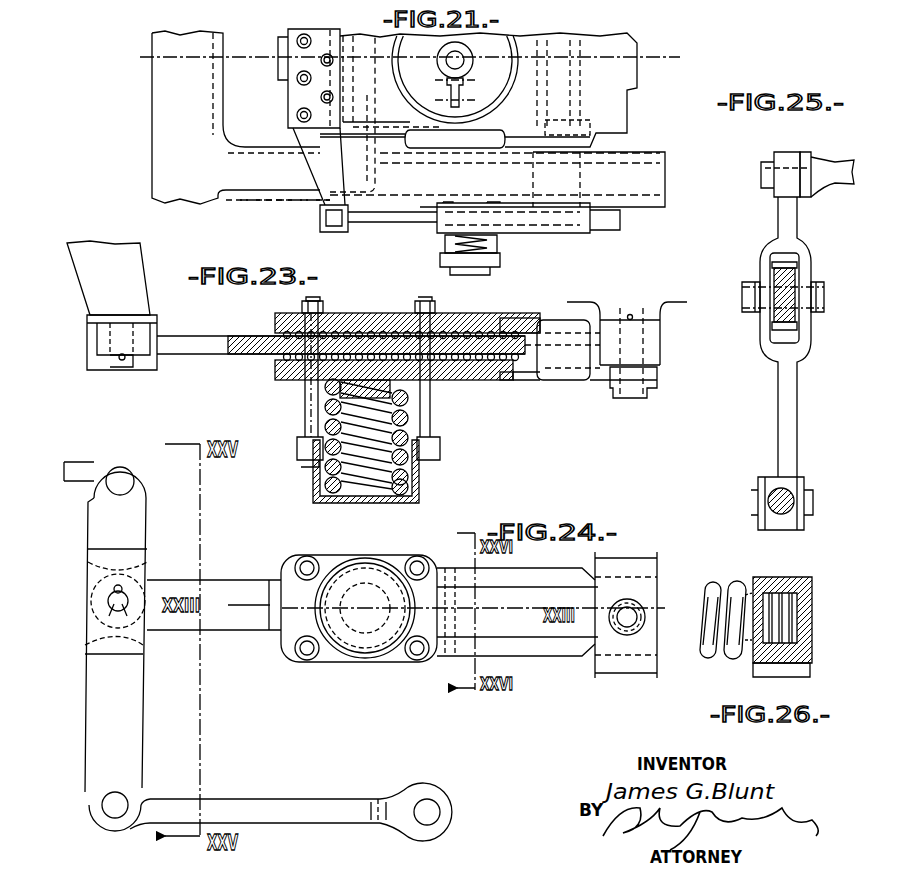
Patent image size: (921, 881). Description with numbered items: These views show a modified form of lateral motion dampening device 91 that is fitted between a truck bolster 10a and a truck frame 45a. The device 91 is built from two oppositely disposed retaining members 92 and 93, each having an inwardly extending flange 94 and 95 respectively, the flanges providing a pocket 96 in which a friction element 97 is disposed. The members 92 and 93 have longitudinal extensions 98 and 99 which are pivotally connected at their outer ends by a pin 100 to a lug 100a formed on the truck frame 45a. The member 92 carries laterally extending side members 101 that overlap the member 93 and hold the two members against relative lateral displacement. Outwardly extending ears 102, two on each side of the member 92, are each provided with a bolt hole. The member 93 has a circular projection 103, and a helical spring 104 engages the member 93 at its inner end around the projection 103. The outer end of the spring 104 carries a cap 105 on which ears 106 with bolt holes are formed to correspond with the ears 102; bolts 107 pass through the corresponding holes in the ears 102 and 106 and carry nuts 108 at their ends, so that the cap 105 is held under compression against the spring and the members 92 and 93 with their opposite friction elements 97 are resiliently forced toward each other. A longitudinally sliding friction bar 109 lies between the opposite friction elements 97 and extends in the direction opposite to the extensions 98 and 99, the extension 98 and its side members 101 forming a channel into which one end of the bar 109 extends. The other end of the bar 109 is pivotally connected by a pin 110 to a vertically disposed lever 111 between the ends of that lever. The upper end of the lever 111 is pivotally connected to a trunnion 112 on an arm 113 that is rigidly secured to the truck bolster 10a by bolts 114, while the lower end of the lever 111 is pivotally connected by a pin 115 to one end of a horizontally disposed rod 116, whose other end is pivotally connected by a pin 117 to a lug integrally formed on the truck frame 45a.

In FIG. 21, the truck bolster 10a is at (602, 112).
In FIG. 21, the truck frame 45a is at (172, 115).
In FIG. 21, the lateral motion dampening device 91 is at (492, 232).
In FIG. 23, the retaining member 92 is at (332, 311).
In FIG. 23, the retaining member 93 is at (297, 380).
In FIG. 23, the inwardly extending flange 94 is at (270, 330).
In FIG. 23, the inwardly extending flange 95 is at (276, 366).
In FIG. 23, the pocket 96 is at (387, 305).
In FIG. 23, the friction element 97 is at (406, 312).
In FIG. 23, the longitudinal extension 98 is at (510, 318).
In FIG. 26, the longitudinal extension 98 is at (806, 610).
In FIG. 23, the longitudinal extension 99 is at (512, 387).
In FIG. 26, the longitudinal extension 99 is at (722, 645).
In FIG. 23, the pin 100 is at (633, 397).
In FIG. 24, the pin 100 is at (627, 622).
In FIG. 23, the lug 100a is at (650, 343).
In FIG. 24, the lug 100a is at (630, 573).
In FIG. 23, the side member 101 is at (570, 363).
In FIG. 24, the side member 101 is at (523, 578).
In FIG. 26, the side member 101 is at (770, 578).
In FIG. 24, the ear 102 is at (308, 556).
In FIG. 23, the circular projection 103 is at (410, 397).
In FIG. 23, the helical spring 104 is at (418, 437).
In FIG. 26, the helical spring 104 is at (712, 600).
In FIG. 23, the cap 105 is at (419, 490).
In FIG. 24, the cap 105 is at (373, 667).
In FIG. 23, the ear 106 is at (295, 450).
In FIG. 23, the bolt 107 is at (306, 420).
In FIG. 23, the nut 108 is at (313, 302).
In FIG. 21, the friction bar 109 is at (410, 226).
In FIG. 23, the friction bar 109 is at (230, 316).
In FIG. 24, the friction bar 109 is at (250, 575).
In FIG. 26, the friction bar 109 is at (745, 590).
In FIG. 25, the friction bar 109 is at (795, 276).
In FIG. 24, the pin 110 is at (128, 598).
In FIG. 25, the pin 110 is at (815, 308).
In FIG. 24, the lever 111 is at (125, 727).
In FIG. 25, the lever 111 is at (785, 220).
In FIG. 23, the trunnion 112 is at (112, 366).
In FIG. 25, the trunnion 112 is at (761, 172).
In FIG. 21, the arm 113 is at (310, 160).
In FIG. 23, the arm 113 is at (108, 278).
In FIG. 24, the arm 113 is at (83, 452).
In FIG. 25, the arm 113 is at (806, 162).
In FIG. 21, the bolt 114 is at (288, 98).
In FIG. 24, the pin 115 is at (118, 792).
In FIG. 25, the pin 115 is at (751, 496).
In FIG. 24, the rod 116 is at (290, 812).
In FIG. 25, the rod 116 is at (781, 488).
In FIG. 24, the pin 117 is at (430, 814).